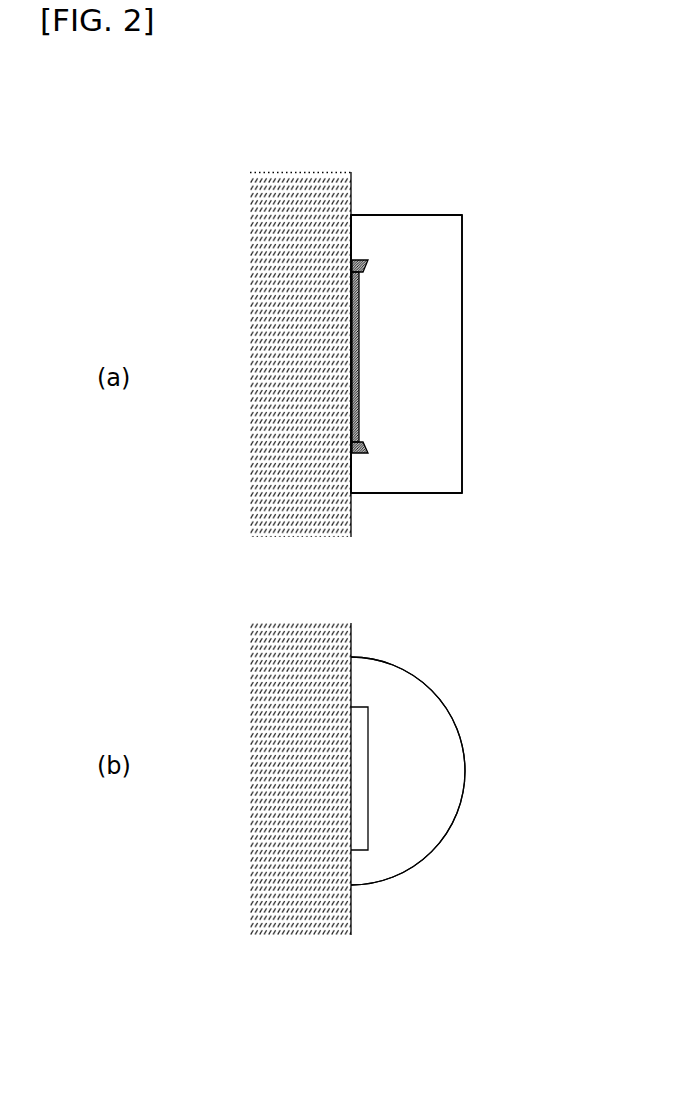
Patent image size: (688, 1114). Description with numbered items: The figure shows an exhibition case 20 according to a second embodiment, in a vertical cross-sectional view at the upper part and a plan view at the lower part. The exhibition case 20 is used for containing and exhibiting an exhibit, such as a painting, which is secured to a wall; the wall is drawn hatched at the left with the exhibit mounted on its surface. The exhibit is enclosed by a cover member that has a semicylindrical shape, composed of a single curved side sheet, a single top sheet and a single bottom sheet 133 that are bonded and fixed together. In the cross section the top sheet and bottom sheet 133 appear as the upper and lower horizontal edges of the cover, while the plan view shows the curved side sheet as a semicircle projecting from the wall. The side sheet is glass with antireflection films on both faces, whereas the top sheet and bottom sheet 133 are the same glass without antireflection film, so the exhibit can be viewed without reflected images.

The exhibition case 20 is at (460, 208).
The bottom sheet 133 is at (405, 494).